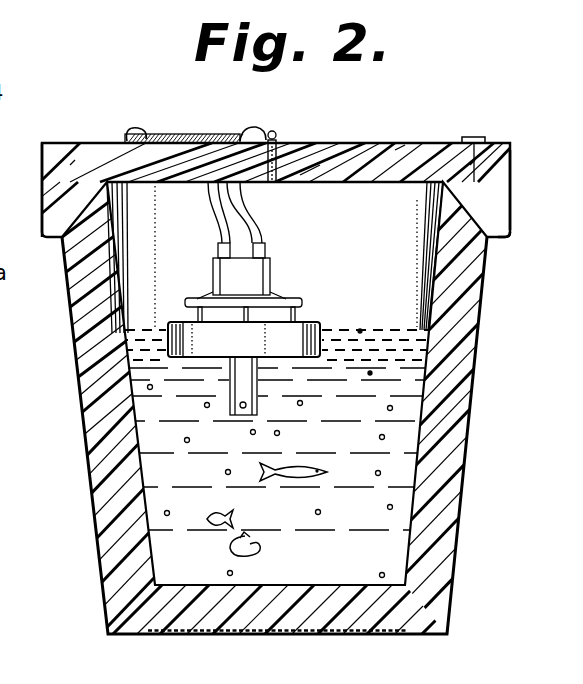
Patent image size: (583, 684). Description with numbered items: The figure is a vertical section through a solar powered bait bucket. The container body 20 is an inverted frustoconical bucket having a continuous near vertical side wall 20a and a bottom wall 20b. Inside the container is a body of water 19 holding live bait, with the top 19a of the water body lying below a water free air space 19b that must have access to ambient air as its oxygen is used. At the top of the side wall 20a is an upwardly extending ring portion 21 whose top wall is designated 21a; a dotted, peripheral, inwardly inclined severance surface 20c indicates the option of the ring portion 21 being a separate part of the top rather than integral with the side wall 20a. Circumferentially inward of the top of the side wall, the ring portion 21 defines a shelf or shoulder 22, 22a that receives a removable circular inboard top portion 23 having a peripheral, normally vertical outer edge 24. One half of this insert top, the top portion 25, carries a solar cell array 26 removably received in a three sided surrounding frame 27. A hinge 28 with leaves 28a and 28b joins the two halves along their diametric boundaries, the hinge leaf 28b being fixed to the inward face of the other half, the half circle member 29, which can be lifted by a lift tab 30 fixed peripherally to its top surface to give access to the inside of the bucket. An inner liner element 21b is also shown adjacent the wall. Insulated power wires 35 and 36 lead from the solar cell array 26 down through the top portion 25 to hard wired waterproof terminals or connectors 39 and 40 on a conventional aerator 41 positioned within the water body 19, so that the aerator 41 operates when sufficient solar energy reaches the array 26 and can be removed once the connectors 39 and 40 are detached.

The water body 19 is at (403, 495).
The top of water body 19a is at (360, 328).
The water free air space 19b is at (410, 297).
The container body 20 is at (78, 513).
The side wall 20a is at (470, 403).
The bottom wall 20b is at (293, 585).
The severance surface 20c is at (500, 240).
The ring portion 21 is at (50, 200).
The top wall of ring portion 21a is at (57, 141).
The lid inner liner 21b is at (452, 212).
The shelf 22 is at (436, 188).
The shoulder 22a is at (478, 172).
The inboard top portion 23 is at (337, 118).
The outer edge 24 is at (67, 158).
The top portion half 25 is at (161, 152).
The solar cell array 26 is at (178, 141).
The surrounding frame 27 is at (129, 136).
The hinge 28 is at (276, 136).
The hinge leaf 28a is at (265, 162).
The hinge leaf 28b is at (280, 162).
The half circle member 29 is at (400, 142).
The lift tab 30 is at (474, 137).
The power wire 35 is at (242, 208).
The power wire 36 is at (210, 193).
The terminal connector 39 is at (267, 243).
The terminal connector 40 is at (218, 243).
The aerator 41 is at (301, 284).